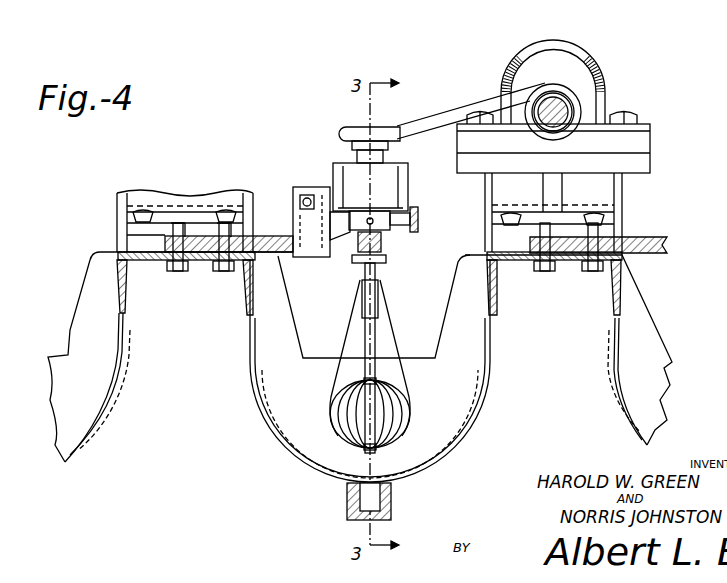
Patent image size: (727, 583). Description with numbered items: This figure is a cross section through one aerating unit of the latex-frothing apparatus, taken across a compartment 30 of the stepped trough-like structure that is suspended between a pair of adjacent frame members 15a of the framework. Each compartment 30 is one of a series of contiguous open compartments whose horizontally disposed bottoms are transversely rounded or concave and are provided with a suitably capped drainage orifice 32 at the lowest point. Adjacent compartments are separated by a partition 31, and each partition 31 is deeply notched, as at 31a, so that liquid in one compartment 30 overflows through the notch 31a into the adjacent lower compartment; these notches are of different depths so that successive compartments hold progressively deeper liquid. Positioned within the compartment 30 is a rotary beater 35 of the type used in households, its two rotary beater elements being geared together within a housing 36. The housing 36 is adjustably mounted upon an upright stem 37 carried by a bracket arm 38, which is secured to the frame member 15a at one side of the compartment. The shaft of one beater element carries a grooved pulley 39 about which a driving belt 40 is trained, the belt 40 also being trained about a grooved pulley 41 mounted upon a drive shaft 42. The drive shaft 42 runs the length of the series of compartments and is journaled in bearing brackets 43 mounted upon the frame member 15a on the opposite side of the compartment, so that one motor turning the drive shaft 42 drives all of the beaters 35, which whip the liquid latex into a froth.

The frame member 15a is at (208, 262).
The compartment 30 is at (110, 417).
The partition 31 is at (93, 282).
The notch 31a is at (298, 318).
The drainage orifice 32 is at (348, 494).
The rotary beater 35 is at (347, 397).
The housing 36 is at (400, 181).
The upright stem 37 is at (308, 186).
The bracket arm 38 is at (265, 236).
The grooved pulley 39 is at (352, 127).
The driving belt 40 is at (451, 112).
The grooved pulley 41 is at (574, 97).
The drive shaft 42 is at (567, 115).
The bearing bracket 43 is at (560, 48).